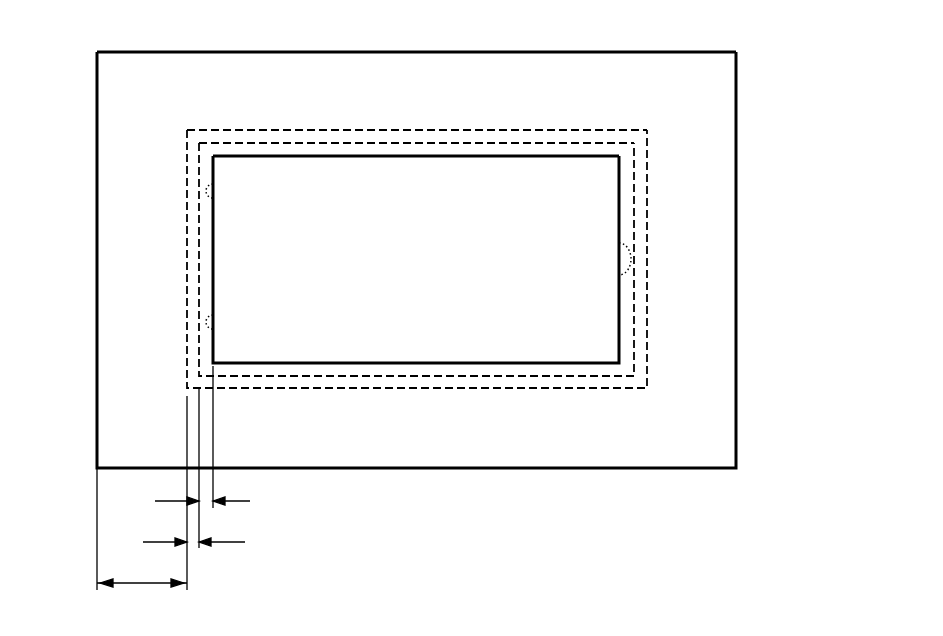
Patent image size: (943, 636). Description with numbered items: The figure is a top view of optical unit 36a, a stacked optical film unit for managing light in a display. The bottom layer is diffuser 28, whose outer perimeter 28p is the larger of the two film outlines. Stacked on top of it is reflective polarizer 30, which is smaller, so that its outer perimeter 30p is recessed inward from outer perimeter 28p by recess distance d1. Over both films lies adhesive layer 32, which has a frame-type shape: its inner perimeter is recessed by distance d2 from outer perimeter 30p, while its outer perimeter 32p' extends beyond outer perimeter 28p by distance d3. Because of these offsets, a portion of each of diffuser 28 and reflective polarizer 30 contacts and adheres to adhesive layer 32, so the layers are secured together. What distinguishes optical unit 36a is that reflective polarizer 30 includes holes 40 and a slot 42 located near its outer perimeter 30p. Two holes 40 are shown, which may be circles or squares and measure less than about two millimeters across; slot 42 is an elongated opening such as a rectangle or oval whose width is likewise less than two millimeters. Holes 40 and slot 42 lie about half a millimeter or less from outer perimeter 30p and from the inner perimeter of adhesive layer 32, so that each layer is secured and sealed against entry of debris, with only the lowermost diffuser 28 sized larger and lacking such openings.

The optical unit 36a is at (722, 38).
The adhesive layer 32 is at (392, 235).
The outer perimeter 32p' is at (416, 27).
The diffuser 28 is at (435, 133).
The outer perimeter 28p is at (506, 130).
The reflective polarizer 30 is at (361, 147).
The outer perimeter 30p is at (310, 142).
The holes 40 is at (214, 196).
The slot 42 is at (620, 257).
The recess distance d1 is at (230, 542).
The recess distance d2 is at (250, 501).
The recess distance d3 is at (142, 586).